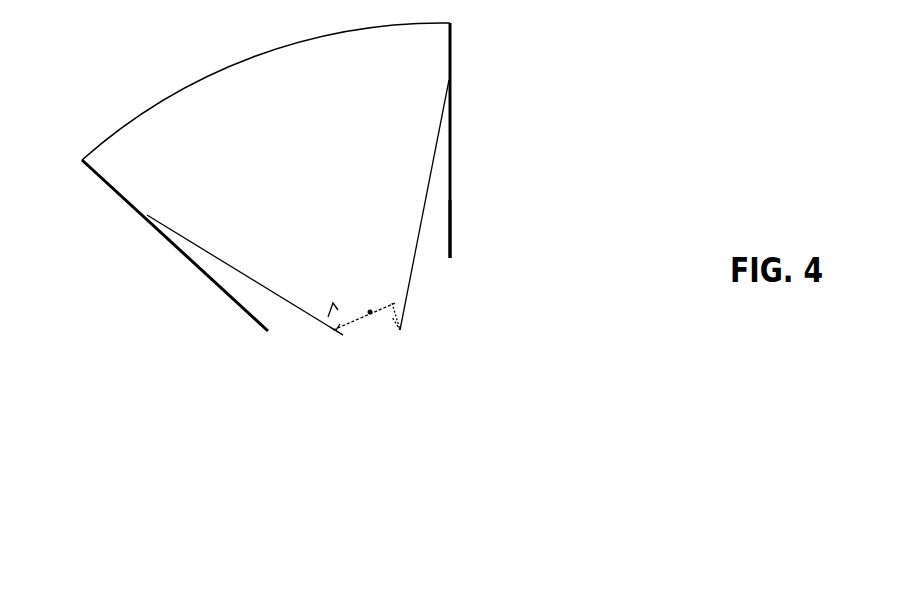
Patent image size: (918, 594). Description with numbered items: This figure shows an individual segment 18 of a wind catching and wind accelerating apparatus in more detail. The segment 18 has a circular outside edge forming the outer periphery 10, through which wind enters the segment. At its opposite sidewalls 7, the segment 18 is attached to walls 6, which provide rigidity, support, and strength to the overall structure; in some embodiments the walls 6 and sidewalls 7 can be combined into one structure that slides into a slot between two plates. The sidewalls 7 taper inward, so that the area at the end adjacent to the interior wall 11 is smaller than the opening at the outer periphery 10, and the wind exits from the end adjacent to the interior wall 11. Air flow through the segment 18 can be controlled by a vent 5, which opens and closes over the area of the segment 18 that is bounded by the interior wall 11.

The outer periphery 10 is at (238, 58).
The segment 18 is at (480, 58).
The walls 6 is at (235, 302).
The side walls 7 is at (312, 312).
The vent 5 is at (390, 300).
The interior wall 11 is at (378, 342).